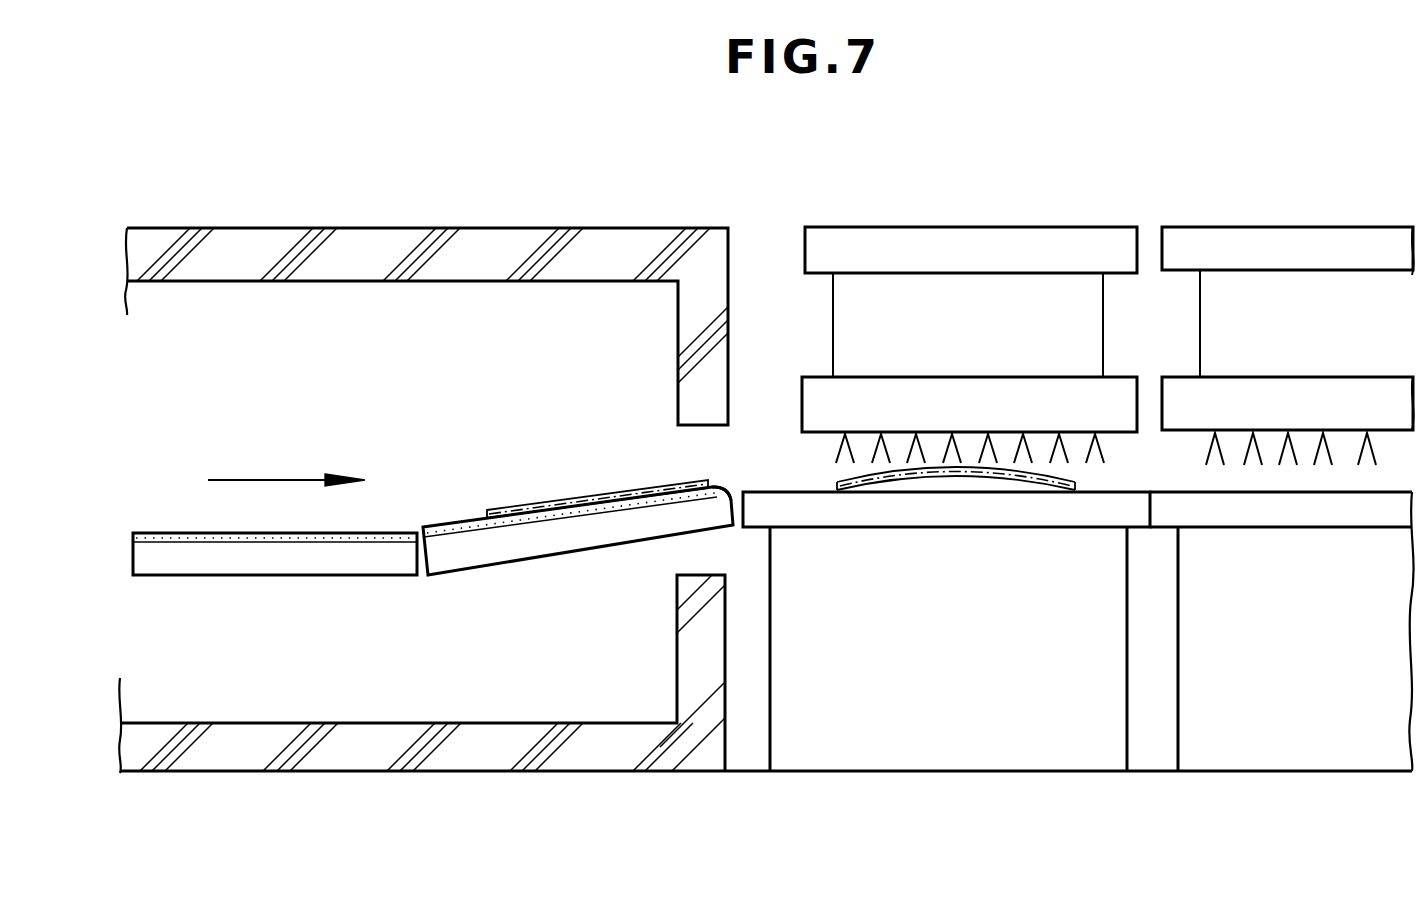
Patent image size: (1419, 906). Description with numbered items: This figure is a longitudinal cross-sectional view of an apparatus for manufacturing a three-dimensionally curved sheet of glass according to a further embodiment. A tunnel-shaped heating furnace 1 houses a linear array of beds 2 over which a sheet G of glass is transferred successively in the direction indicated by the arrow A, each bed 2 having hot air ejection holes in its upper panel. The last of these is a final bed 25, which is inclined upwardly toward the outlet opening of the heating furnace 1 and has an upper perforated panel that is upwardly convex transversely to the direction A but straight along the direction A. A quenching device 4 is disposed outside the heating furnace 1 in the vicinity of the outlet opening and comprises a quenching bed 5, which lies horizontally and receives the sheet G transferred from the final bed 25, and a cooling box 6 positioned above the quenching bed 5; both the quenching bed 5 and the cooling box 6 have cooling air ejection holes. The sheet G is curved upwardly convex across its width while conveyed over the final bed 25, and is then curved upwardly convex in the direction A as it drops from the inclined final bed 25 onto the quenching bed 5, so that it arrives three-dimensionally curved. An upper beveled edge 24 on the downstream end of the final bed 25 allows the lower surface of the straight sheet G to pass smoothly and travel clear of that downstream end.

The heating furnace 1 is at (597, 228).
The bed 2 is at (338, 575).
The final bed 25 is at (580, 535).
The upper beveled edge 24 is at (724, 490).
The sheet of glass G is at (566, 500).
The direction of transfer A is at (295, 480).
The quenching device 4 is at (1034, 220).
The cooling box 6 is at (992, 390).
The quenching bed 5 is at (978, 515).